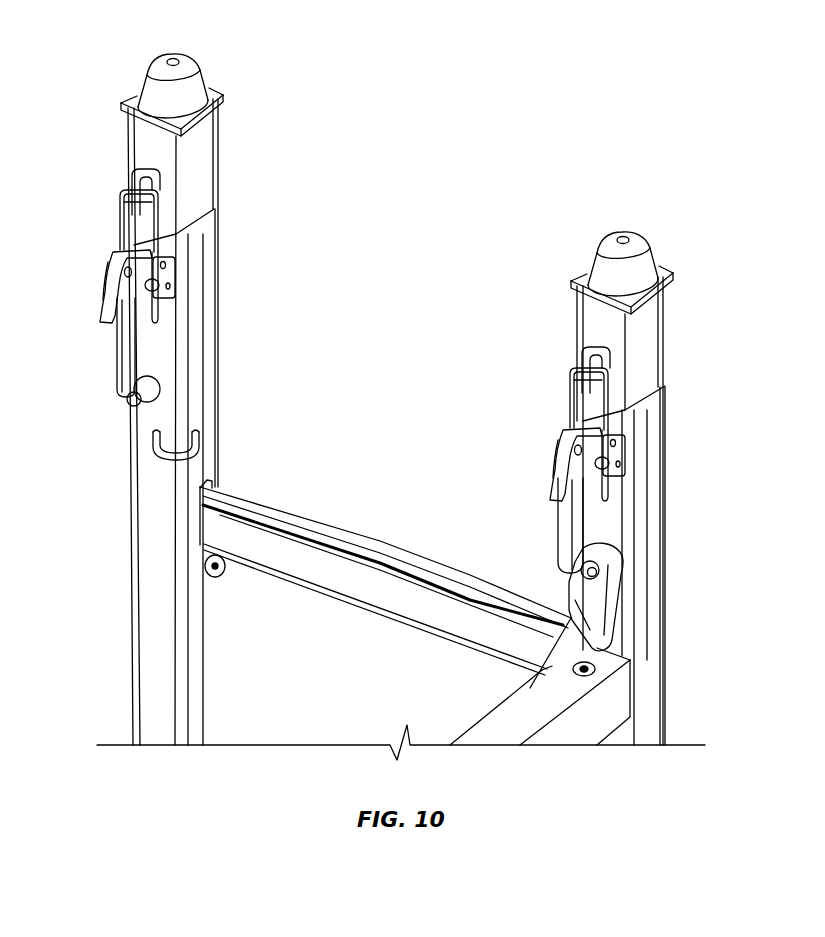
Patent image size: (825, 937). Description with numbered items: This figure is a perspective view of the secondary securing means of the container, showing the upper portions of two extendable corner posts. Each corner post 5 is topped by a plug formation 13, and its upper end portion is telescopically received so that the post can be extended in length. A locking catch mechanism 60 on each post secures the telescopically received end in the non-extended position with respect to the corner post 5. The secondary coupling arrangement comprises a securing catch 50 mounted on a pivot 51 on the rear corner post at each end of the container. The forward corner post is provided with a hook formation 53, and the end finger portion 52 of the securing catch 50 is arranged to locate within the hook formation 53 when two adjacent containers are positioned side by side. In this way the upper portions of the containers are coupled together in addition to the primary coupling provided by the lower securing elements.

The corner post 5 is at (648, 453).
The plug formation 13 is at (185, 73).
The securing catch 50 is at (607, 630).
The pivot 51 is at (598, 572).
The end finger portion 52 is at (556, 632).
The hook formation 53 is at (157, 450).
The locking catch mechanism 60 is at (170, 240).